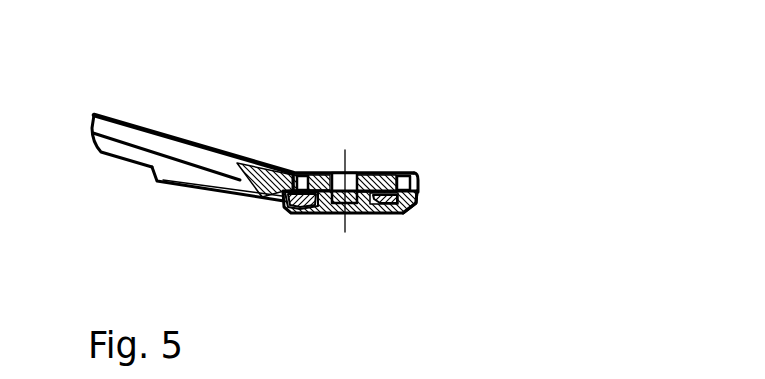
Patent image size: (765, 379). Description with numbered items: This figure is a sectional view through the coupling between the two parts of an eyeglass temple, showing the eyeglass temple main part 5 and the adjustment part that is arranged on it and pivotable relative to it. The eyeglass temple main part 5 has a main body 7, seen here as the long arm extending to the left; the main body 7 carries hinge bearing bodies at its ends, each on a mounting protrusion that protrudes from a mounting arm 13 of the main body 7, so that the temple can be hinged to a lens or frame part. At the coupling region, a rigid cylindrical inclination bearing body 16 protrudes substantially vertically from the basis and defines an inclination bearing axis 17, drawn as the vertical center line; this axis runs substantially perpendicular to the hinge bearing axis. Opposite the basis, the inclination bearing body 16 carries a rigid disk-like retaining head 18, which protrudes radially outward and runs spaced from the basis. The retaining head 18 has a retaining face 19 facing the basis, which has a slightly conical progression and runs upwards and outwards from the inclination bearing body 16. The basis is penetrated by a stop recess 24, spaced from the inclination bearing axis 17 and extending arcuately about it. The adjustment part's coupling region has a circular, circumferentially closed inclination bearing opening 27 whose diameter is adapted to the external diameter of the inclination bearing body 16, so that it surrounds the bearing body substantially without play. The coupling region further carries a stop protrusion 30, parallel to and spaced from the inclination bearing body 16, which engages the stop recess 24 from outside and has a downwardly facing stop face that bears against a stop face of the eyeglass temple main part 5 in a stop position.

The eyeglass temple main part 5 is at (215, 118).
The main body 7 is at (192, 140).
The mounting arm 13 is at (178, 177).
The inclination bearing body 16 is at (412, 206).
The inclination bearing axis 17 is at (360, 206).
The retaining head 18 is at (328, 205).
The retaining face 19 is at (278, 206).
The stop recess 24 is at (297, 172).
The inclination bearing opening 27 is at (364, 172).
The stop protrusion 30 is at (306, 172).